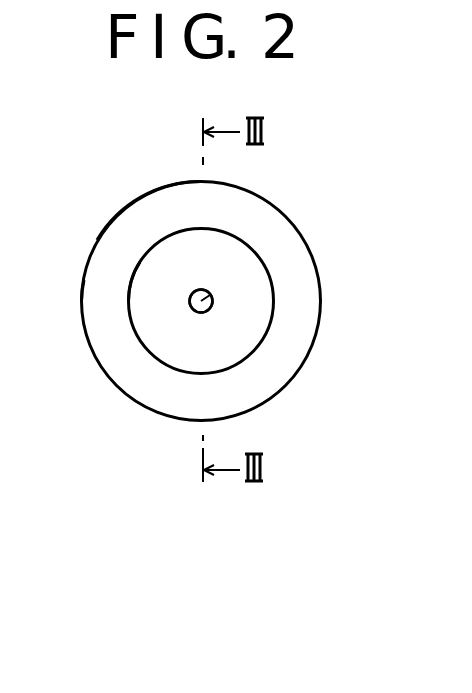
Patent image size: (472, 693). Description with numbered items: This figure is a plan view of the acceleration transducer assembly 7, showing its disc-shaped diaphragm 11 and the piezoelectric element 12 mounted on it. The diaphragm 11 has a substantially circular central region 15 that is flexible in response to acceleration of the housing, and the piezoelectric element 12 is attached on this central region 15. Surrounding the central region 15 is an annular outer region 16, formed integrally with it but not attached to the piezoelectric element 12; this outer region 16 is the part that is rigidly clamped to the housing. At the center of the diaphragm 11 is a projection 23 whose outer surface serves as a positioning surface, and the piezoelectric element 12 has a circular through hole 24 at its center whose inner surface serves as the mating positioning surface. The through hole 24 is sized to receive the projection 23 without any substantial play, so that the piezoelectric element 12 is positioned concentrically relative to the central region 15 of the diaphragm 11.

The acceleration transducer assembly 7 is at (267, 193).
The diaphragm 11 is at (130, 220).
The piezoelectric element 12 is at (164, 343).
The central region 15 is at (129, 288).
The outer region 16 is at (102, 318).
The projection 23 is at (211, 295).
The through hole 24 is at (211, 307).